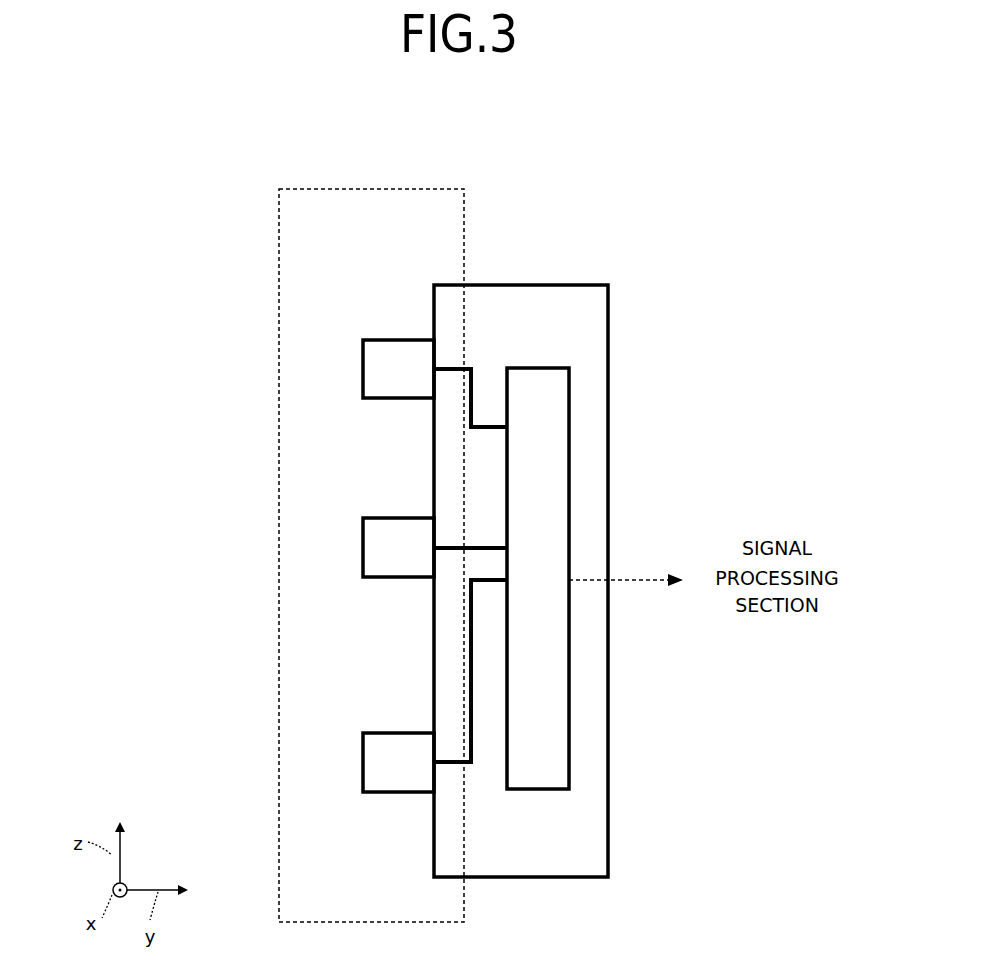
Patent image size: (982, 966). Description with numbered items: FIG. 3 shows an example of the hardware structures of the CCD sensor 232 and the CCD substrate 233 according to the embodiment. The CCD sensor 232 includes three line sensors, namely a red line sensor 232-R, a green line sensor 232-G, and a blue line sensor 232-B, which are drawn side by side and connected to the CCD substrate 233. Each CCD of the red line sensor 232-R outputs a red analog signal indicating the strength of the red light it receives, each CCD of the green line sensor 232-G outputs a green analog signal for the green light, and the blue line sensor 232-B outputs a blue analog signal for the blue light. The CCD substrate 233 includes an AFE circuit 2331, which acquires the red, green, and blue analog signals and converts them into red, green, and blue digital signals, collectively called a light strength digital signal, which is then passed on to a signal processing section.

The CCD sensor 232 is at (375, 187).
The CCD substrate 233 is at (555, 284).
The red line sensor 232-R is at (392, 338).
The green line sensor 232-G is at (397, 518).
The blue line sensor 232-B is at (397, 732).
The AFE circuit 2331 is at (538, 366).